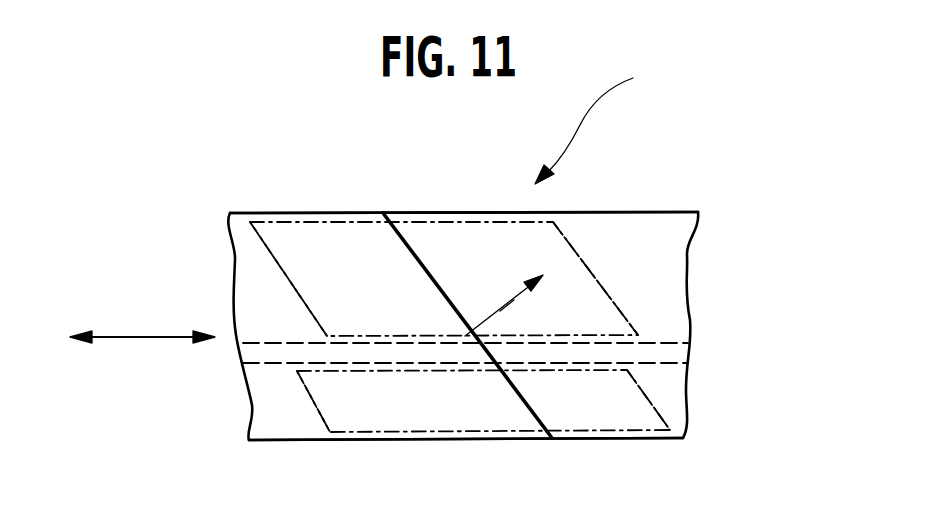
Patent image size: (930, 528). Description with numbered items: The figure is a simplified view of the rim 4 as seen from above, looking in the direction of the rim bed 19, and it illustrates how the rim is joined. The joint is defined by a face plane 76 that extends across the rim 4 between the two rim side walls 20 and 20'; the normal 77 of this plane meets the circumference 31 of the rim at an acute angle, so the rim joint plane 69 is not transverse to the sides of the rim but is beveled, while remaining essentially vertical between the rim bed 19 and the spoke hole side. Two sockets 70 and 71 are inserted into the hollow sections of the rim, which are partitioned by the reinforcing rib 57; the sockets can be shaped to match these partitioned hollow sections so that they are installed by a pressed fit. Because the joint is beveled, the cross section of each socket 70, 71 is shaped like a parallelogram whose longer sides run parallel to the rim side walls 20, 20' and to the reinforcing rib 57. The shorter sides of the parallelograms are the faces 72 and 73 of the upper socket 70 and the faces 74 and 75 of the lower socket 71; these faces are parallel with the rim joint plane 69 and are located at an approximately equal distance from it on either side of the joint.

The rim 4 is at (595, 118).
The rim bed 19 is at (660, 295).
The rim side wall 20 is at (466, 474).
The rim side wall 20' is at (464, 155).
The circumference 31 is at (143, 336).
The reinforcing rib 57 is at (682, 353).
The rim joint plane 69 is at (440, 287).
The socket 70 is at (342, 258).
The socket 71 is at (368, 422).
The face of socket 72 is at (277, 270).
The face of socket 73 is at (598, 279).
The face of socket 74 is at (303, 390).
The face of socket 75 is at (653, 417).
The joint face plane 76 is at (383, 212).
The plane normal 77 is at (507, 306).